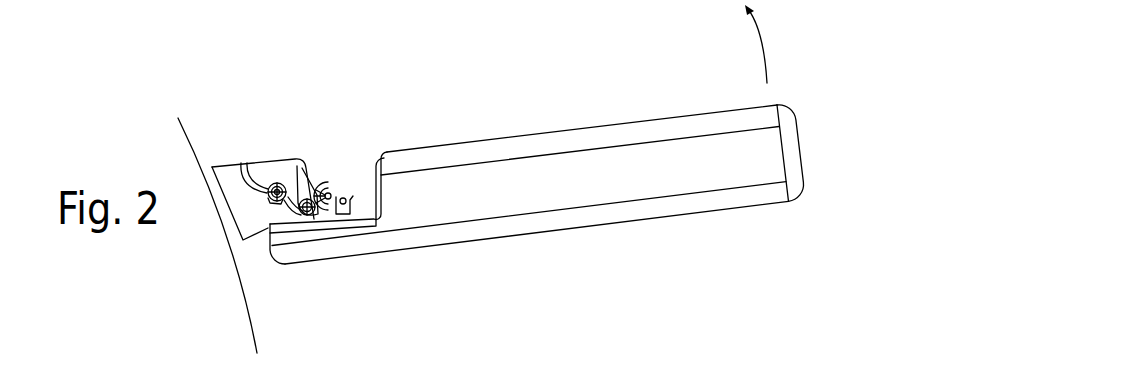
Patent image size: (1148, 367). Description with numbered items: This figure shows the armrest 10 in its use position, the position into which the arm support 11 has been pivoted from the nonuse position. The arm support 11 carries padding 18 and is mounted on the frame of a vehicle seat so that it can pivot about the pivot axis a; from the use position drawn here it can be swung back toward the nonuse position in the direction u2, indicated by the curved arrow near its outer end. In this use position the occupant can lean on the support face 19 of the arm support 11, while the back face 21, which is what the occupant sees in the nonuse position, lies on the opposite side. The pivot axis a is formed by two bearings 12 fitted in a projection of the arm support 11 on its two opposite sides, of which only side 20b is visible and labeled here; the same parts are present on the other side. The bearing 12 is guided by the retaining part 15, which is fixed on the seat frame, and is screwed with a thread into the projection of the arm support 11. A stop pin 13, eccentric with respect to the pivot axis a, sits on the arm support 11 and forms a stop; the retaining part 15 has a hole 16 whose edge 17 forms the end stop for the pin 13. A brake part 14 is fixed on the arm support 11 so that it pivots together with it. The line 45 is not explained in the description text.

The armrest 10 is at (588, 78).
The arm support 11 is at (550, 203).
The bearing 12 is at (313, 216).
The stop pin 13 is at (273, 186).
The brake part 14 is at (331, 216).
The retaining part 15 is at (224, 172).
The hole 16 is at (276, 212).
The edge 17 is at (305, 203).
The padding 18 is at (641, 120).
The support face 19 is at (552, 118).
The side of the arm support 20b is at (366, 143).
The back face 21 is at (653, 240).
The workpiece surface 45 is at (247, 308).
The pivot axis a is at (308, 200).
The pivot direction toward nonuse position u2 is at (761, 44).